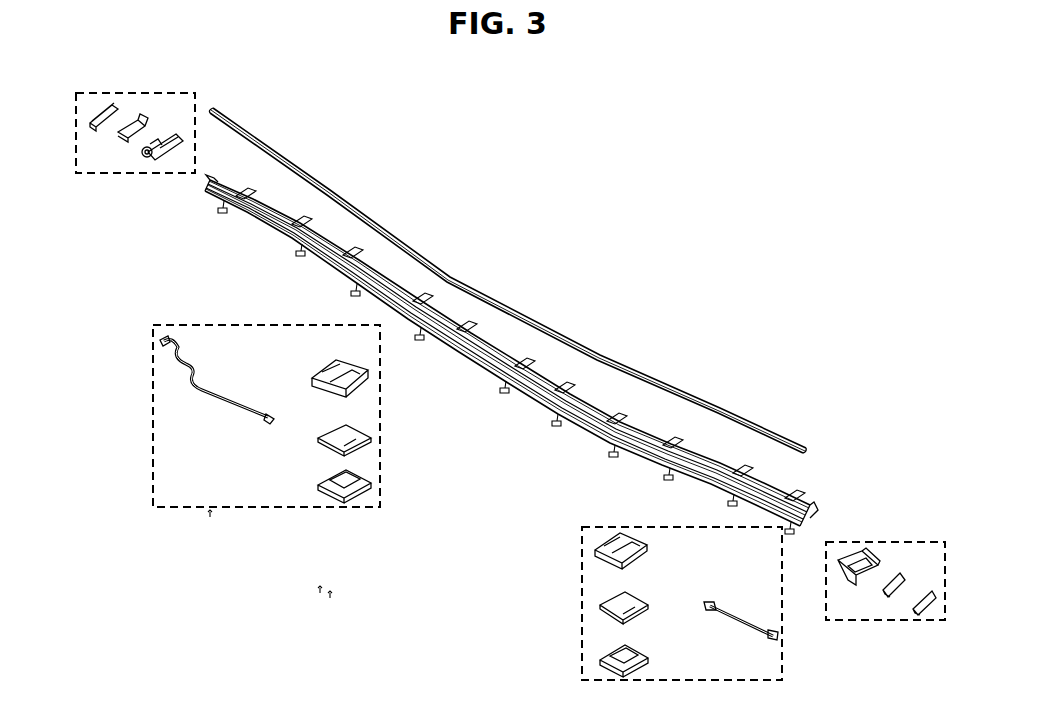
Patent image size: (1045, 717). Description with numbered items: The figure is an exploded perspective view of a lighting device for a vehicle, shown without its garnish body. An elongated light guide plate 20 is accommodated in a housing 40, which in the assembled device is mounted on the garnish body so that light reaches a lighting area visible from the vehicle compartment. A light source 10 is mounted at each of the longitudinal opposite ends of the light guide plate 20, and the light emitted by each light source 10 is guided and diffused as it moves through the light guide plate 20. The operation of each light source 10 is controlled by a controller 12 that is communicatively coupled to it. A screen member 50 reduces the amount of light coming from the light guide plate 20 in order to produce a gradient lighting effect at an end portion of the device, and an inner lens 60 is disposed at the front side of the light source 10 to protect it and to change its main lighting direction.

The light source 10 is at (93, 179).
The controller 12 is at (153, 393).
The light guide plate 20 is at (630, 358).
The housing 40 is at (527, 408).
The screen member 50 is at (176, 140).
The inner lens 60 is at (147, 140).